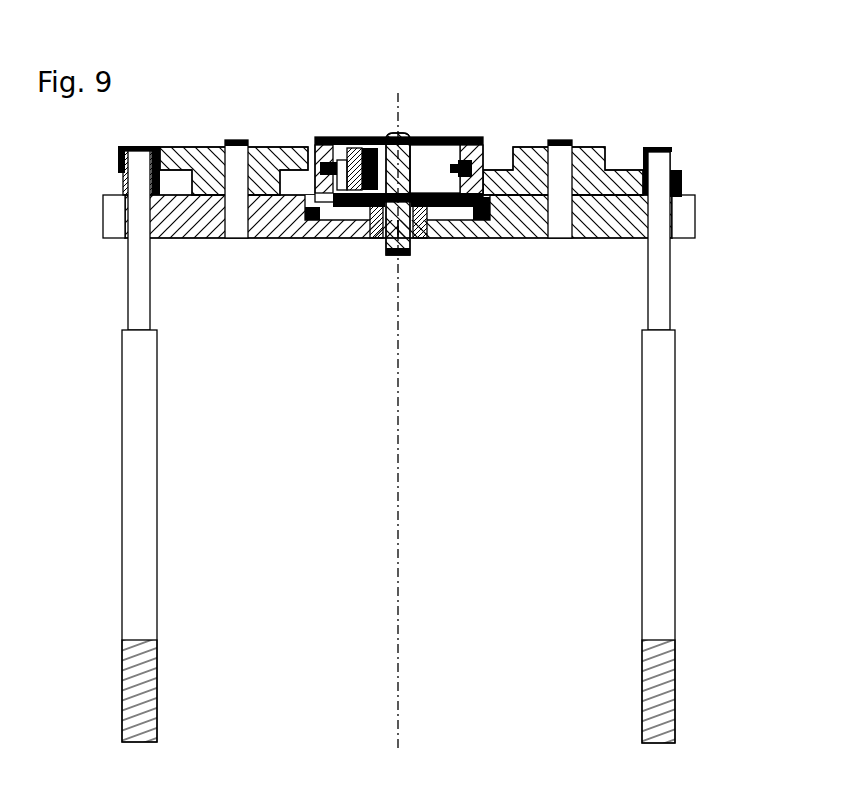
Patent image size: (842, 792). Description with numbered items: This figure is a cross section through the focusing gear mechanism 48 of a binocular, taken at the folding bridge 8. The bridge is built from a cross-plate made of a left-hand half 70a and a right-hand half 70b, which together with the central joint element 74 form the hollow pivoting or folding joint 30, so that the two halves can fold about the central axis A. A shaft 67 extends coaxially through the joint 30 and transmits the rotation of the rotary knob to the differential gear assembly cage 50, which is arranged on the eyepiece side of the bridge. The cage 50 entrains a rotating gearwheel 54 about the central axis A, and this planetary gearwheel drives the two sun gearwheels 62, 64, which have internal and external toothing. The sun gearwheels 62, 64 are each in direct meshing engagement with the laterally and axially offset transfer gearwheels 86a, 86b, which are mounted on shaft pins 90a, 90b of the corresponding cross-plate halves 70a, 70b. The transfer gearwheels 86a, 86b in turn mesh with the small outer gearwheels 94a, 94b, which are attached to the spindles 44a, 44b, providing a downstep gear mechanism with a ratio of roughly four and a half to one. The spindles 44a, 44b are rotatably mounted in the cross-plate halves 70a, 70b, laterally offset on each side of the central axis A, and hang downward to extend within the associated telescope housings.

The folding bridge 8 is at (562, 70).
The focusing gear mechanism 48 is at (509, 68).
The outer gearwheel 94a is at (118, 150).
The transfer gearwheel 86a is at (190, 147).
The shaft pin 90a is at (237, 141).
The rotating gearwheel 54 is at (330, 138).
The differential gear assembly cage 50 is at (444, 145).
The sun gearwheel 62 is at (478, 137).
The sun gearwheel 64 is at (485, 170).
The shaft pin 90b is at (562, 141).
The transfer gearwheel 86b is at (620, 168).
The outer gearwheel 94b is at (676, 160).
The cross-plate half 70a is at (102, 218).
The cross-plate half 70b is at (697, 218).
The folding joint 30 is at (378, 259).
The shaft 67 is at (403, 258).
The central joint element 74 is at (420, 240).
The spindle 44a is at (157, 617).
The spindle 44b is at (675, 625).
The central axis A is at (400, 688).